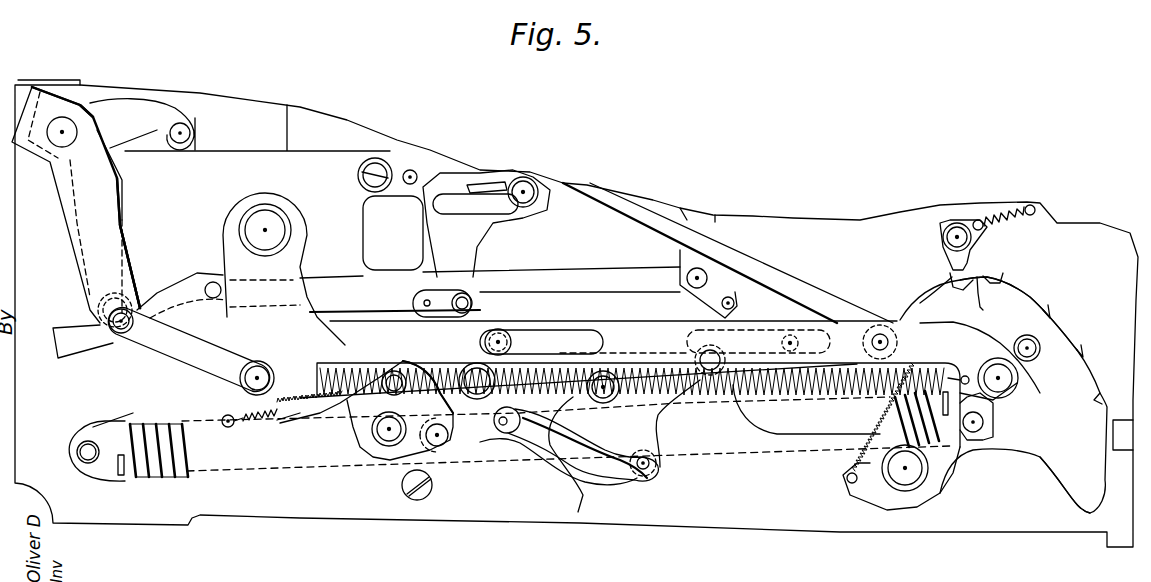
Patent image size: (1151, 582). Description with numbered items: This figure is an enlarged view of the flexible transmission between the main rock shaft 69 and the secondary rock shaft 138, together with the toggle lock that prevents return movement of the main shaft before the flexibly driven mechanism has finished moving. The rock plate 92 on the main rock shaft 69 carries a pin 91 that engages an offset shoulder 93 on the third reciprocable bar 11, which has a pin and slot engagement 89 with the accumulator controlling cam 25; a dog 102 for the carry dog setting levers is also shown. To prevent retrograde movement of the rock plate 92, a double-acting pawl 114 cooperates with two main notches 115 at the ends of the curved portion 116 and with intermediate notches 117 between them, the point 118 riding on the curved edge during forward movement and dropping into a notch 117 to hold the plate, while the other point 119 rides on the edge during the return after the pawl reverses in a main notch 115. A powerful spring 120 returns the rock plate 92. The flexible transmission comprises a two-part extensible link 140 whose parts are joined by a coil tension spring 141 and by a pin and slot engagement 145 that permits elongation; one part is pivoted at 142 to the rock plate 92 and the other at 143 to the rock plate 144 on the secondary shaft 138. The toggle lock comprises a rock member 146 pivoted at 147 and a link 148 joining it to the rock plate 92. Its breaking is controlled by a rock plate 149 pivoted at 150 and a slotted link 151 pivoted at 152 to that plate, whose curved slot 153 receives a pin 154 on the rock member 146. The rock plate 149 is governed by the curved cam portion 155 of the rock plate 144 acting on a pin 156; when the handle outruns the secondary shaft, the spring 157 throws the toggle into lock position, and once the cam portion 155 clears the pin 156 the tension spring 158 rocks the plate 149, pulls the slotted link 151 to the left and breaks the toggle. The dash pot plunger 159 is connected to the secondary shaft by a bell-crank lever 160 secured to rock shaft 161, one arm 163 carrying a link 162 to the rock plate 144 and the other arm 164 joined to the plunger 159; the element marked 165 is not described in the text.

The third reciprocable bar 11 is at (805, 440).
The accumulator controlling cam 25 is at (425, 237).
The main rock shaft 69 is at (898, 482).
The pin and slot engagement 89 is at (462, 293).
The pin 91 is at (1040, 343).
The rock plate 92 is at (1040, 456).
The offset portion or shoulder 93 is at (762, 325).
The dog 102 is at (740, 262).
The double-acting pawl 114 is at (975, 270).
The main notch 115 is at (945, 280).
The curved portion 116 is at (1030, 302).
The intermediate notch 117 is at (1000, 280).
The point 118 is at (950, 288).
The other point 119 is at (981, 300).
The spring 120 is at (148, 472).
The secondary rock shaft 138 is at (268, 211).
The two-part extensible link 140 is at (581, 313).
The coil tension spring 141 is at (555, 442).
The pivotal connection 142 is at (1010, 392).
The pivotal connection 143 is at (240, 386).
The rock plate 144 is at (217, 346).
The pin and slot engagement 145 is at (544, 312).
The rock member 146 is at (655, 430).
The pivot 147 is at (603, 402).
The link 148 is at (780, 395).
The rock plate 149 is at (403, 462).
The pivot 150 is at (386, 450).
The slotted link 151 is at (507, 460).
The pivotal connection 152 is at (447, 450).
The curved slot 153 is at (578, 512).
The pin 154 is at (658, 468).
The curved cam portion 155 is at (300, 421).
The pin 156 is at (352, 420).
The spring 157 is at (875, 426).
The tension spring 158 is at (262, 423).
The dash pot plunger 159 is at (196, 136).
The bell-crank lever 160 is at (124, 184).
The rock shaft 161 is at (82, 103).
The link 162 is at (170, 306).
The arm 163 is at (125, 240).
The other arm 164 is at (142, 100).
The arm 165 is at (125, 240).